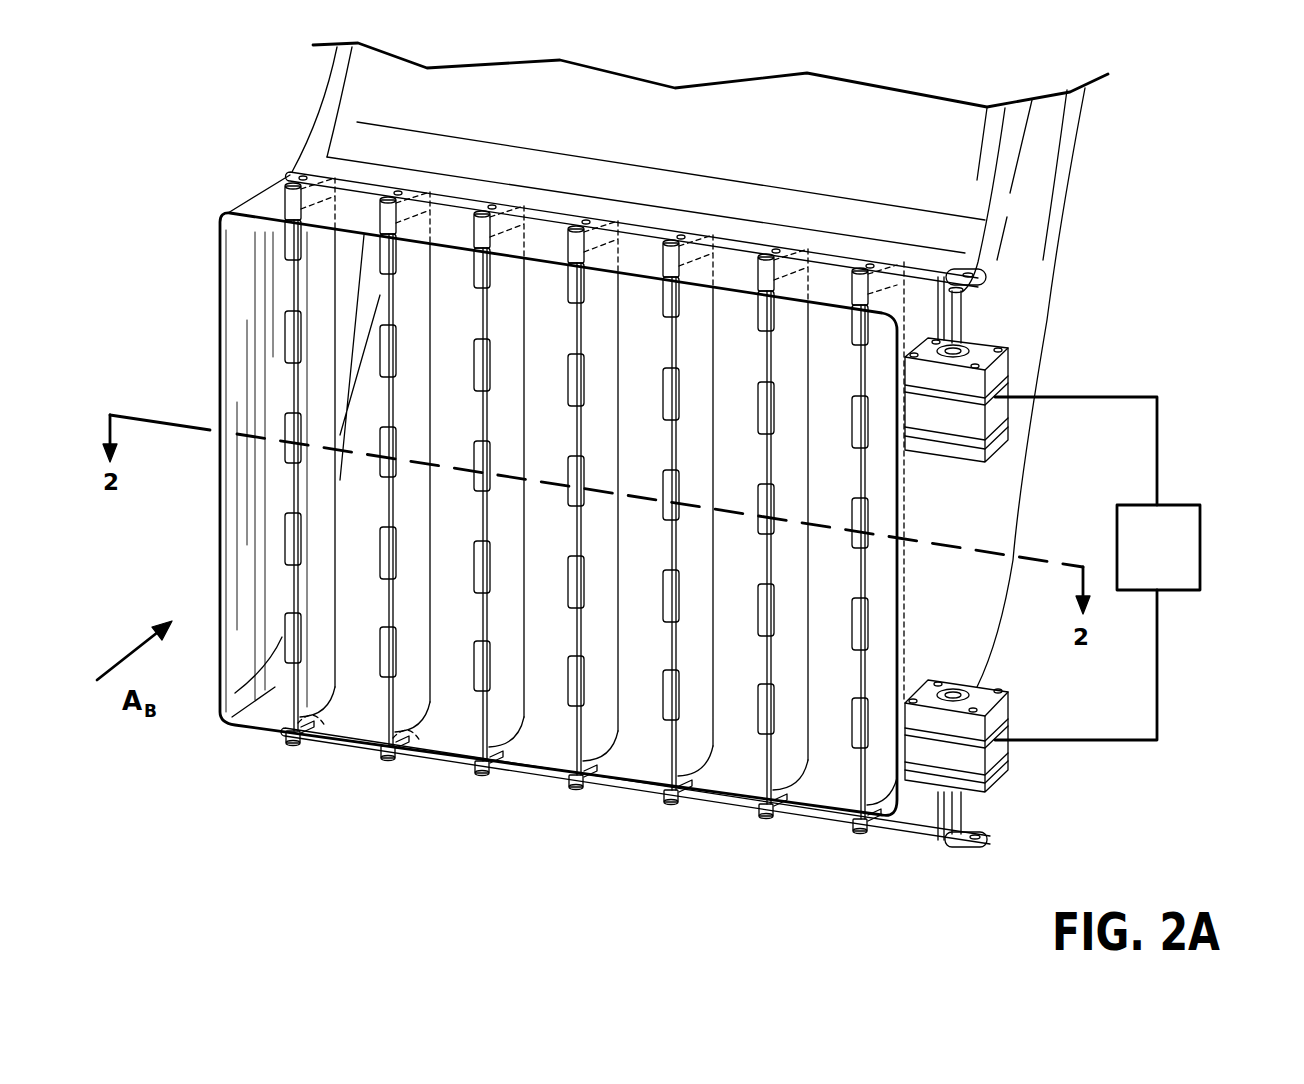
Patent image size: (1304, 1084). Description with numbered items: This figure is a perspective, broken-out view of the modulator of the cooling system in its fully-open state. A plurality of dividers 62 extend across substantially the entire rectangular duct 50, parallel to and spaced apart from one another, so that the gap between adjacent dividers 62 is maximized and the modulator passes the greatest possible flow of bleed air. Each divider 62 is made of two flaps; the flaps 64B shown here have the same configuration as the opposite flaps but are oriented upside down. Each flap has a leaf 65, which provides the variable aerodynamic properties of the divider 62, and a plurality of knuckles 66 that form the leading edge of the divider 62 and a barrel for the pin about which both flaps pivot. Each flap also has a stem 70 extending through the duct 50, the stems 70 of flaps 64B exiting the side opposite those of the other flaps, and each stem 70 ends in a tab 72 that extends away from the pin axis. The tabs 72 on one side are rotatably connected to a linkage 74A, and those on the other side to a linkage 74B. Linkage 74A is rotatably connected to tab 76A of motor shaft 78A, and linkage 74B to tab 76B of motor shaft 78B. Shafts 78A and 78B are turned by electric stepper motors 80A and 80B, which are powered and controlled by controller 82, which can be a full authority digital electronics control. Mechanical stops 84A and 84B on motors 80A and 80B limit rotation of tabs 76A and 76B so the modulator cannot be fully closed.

The rectangular duct 50 is at (216, 328).
The divider 62 is at (682, 806).
The flap 64B is at (517, 725).
The leaf 65 is at (608, 410).
The knuckle 66 is at (570, 313).
The stem 70 is at (286, 200).
The tab 72 is at (294, 180).
The linkage 74A is at (560, 207).
The linkage 74B is at (445, 757).
The tab 76A is at (982, 290).
The tab 76B is at (966, 850).
The motor shaft 78A is at (962, 318).
The motor shaft 78B is at (962, 818).
The electric stepper motor 80A is at (998, 438).
The electric stepper motor 80B is at (998, 788).
The controller 82 is at (1202, 546).
The mechanical stop 84A is at (939, 275).
The mechanical stop 84B is at (938, 798).